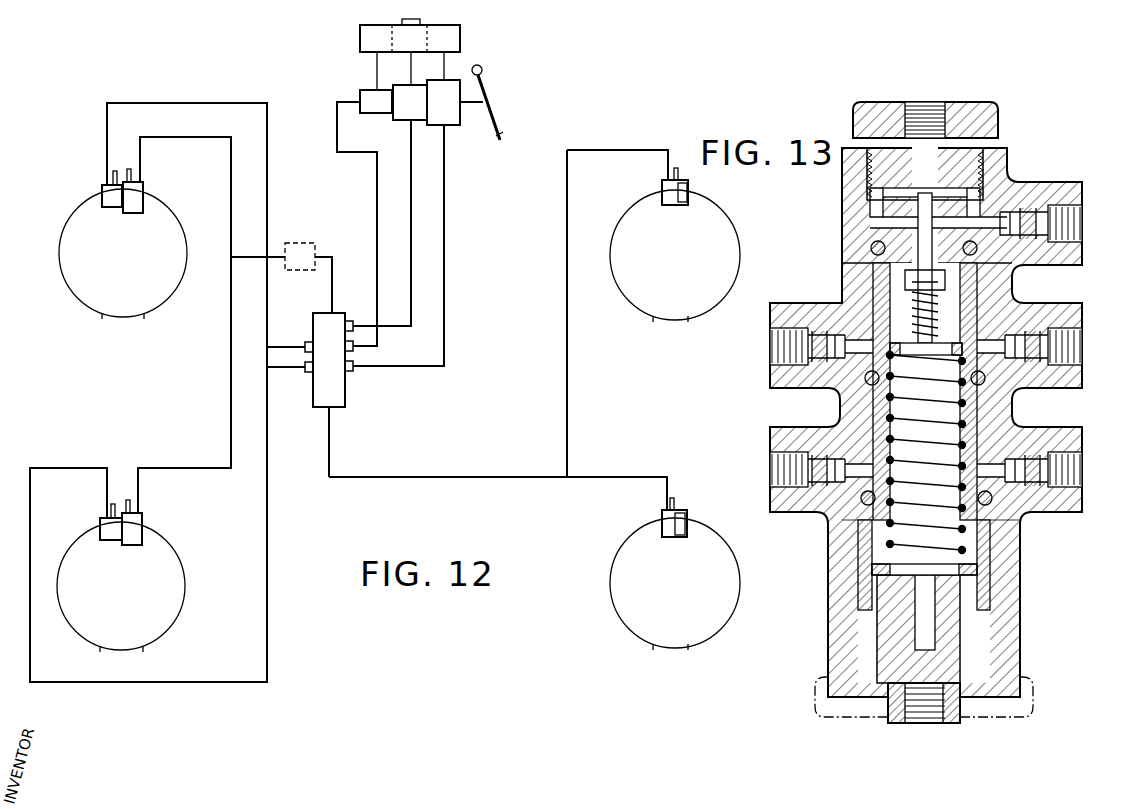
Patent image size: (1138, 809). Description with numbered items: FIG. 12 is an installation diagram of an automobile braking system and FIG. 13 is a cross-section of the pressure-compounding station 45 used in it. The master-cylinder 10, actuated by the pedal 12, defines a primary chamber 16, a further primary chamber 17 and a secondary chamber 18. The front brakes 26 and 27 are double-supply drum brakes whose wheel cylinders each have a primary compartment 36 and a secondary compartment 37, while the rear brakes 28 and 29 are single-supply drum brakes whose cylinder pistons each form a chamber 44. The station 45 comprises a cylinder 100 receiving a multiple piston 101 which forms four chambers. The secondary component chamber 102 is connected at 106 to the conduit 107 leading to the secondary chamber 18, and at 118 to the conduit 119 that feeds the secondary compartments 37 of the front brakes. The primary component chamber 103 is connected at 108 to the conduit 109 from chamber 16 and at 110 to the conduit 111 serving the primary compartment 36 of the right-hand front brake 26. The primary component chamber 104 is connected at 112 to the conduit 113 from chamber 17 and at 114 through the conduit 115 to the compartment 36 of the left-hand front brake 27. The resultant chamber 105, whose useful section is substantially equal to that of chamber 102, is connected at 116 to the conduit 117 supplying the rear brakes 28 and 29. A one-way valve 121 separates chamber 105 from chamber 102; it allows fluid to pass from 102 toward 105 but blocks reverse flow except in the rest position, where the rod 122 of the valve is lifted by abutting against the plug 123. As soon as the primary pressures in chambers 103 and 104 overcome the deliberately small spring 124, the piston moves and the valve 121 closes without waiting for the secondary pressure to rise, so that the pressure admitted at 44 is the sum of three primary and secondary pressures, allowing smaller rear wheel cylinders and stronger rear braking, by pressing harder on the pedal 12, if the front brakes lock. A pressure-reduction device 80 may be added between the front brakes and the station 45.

In FIG. 12, the master-cylinder 10 is at (427, 72).
In FIG. 12, the pedal 12 is at (500, 136).
In FIG. 12, the primary chamber 16 is at (368, 111).
In FIG. 12, the further primary chamber 17 is at (435, 112).
In FIG. 12, the secondary chamber 18 is at (402, 112).
In FIG. 12, the right-hand front brake 26 is at (110, 265).
In FIG. 12, the left-hand front brake 27 is at (108, 598).
In FIG. 12, the rear brake 28 is at (662, 267).
In FIG. 12, the rear brake 29 is at (662, 595).
In FIG. 12, the primary compartment 36 is at (102, 190).
In FIG. 12, the secondary compartment 37 is at (143, 190).
In FIG. 12, the chamber 44 is at (662, 187).
In FIG. 12, the pressure-compounding station 45 is at (328, 342).
In FIG. 13, the pressure-compounding station 45 is at (842, 249).
In FIG. 12, the pressure-reduction device 80 is at (301, 243).
In FIG. 13, the cylinder 100 is at (840, 546).
In FIG. 13, the multiple piston 101 is at (876, 411).
In FIG. 13, the secondary component chamber 102 is at (1020, 183).
In FIG. 13, the primary component chamber 103 is at (982, 350).
In FIG. 13, the primary component chamber 104 is at (990, 478).
In FIG. 13, the resultant chamber 105 is at (967, 553).
In FIG. 12, the connection 106 is at (349, 321).
In FIG. 13, the connection 106 is at (1083, 225).
In FIG. 12, the conduit 107 is at (411, 192).
In FIG. 12, the connection 108 is at (356, 348).
In FIG. 13, the connection 108 is at (1083, 346).
In FIG. 12, the conduit 109 is at (377, 188).
In FIG. 12, the connection 110 is at (305, 346).
In FIG. 13, the connection 110 is at (770, 342).
In FIG. 12, the conduit 111 is at (268, 156).
In FIG. 12, the connection 112 is at (356, 370).
In FIG. 13, the connection 112 is at (1083, 470).
In FIG. 12, the conduit 113 is at (444, 232).
In FIG. 12, the connection 114 is at (303, 365).
In FIG. 13, the connection 114 is at (770, 462).
In FIG. 12, the conduit 115 is at (267, 495).
In FIG. 12, the connection 116 is at (331, 410).
In FIG. 13, the connection 116 is at (912, 716).
In FIG. 12, the conduit 117 is at (450, 477).
In FIG. 12, the connection 118 is at (331, 313).
In FIG. 13, the connection 118 is at (923, 101).
In FIG. 12, the conduit 119 is at (333, 257).
In FIG. 13, the one-way valve 121 is at (896, 300).
In FIG. 13, the rod 122 is at (930, 256).
In FIG. 13, the plug 123 is at (890, 207).
In FIG. 13, the spring 124 is at (893, 550).